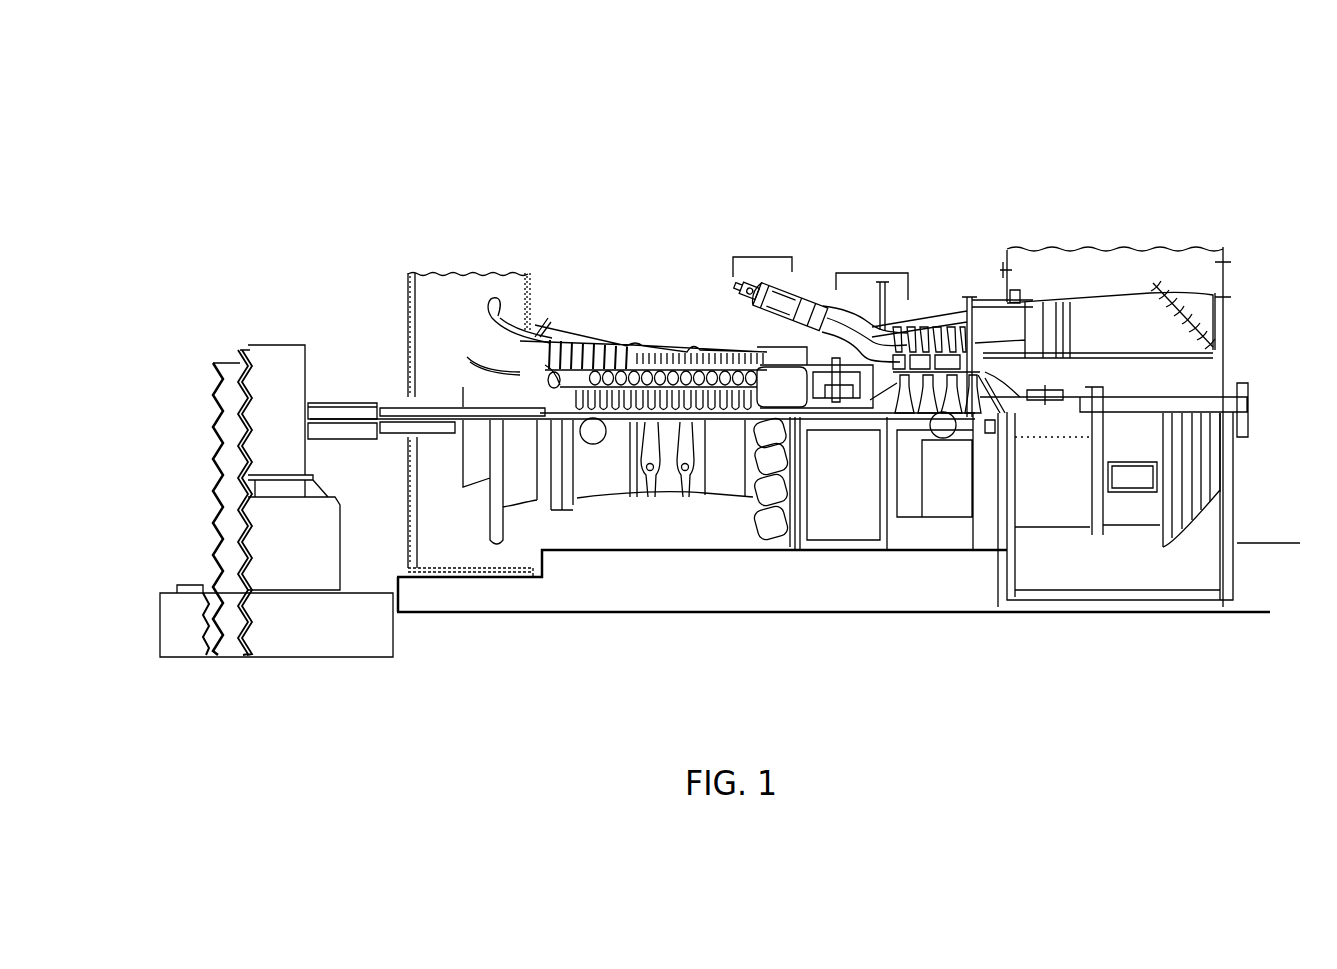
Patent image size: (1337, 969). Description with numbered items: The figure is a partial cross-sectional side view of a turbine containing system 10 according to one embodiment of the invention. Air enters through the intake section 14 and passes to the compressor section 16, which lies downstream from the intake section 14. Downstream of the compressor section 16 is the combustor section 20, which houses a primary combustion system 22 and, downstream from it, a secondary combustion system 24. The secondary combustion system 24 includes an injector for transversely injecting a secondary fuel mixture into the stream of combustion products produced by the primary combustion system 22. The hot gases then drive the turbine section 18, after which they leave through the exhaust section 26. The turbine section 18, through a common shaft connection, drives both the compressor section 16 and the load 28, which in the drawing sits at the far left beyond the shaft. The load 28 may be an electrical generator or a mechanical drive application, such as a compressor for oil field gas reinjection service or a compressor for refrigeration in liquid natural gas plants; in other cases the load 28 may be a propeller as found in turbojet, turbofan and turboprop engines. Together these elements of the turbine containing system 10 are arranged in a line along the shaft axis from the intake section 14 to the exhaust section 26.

The turbine containing system 10 is at (657, 660).
The intake section 14 is at (482, 268).
The compressor section 16 is at (678, 337).
The turbine section 18 is at (948, 305).
The combustor section 20 is at (827, 262).
The primary combustion system 22 is at (778, 257).
The secondary combustion system 24 is at (875, 275).
The exhaust section 26 is at (1127, 298).
The load 28 is at (280, 355).